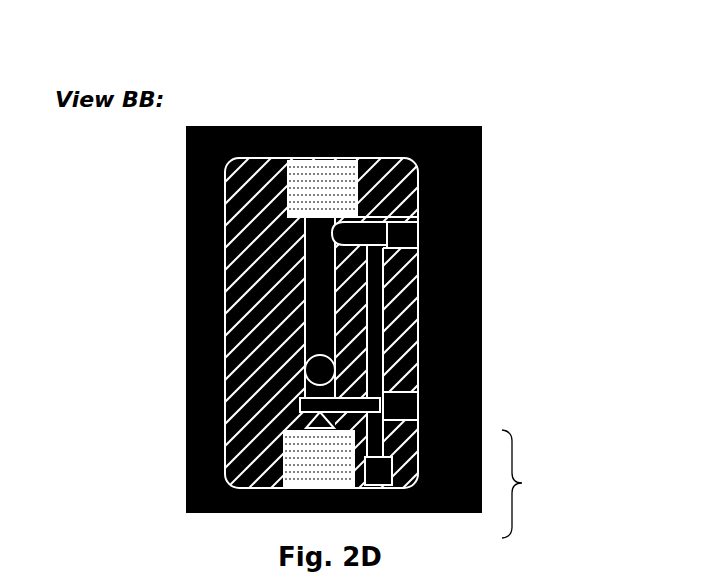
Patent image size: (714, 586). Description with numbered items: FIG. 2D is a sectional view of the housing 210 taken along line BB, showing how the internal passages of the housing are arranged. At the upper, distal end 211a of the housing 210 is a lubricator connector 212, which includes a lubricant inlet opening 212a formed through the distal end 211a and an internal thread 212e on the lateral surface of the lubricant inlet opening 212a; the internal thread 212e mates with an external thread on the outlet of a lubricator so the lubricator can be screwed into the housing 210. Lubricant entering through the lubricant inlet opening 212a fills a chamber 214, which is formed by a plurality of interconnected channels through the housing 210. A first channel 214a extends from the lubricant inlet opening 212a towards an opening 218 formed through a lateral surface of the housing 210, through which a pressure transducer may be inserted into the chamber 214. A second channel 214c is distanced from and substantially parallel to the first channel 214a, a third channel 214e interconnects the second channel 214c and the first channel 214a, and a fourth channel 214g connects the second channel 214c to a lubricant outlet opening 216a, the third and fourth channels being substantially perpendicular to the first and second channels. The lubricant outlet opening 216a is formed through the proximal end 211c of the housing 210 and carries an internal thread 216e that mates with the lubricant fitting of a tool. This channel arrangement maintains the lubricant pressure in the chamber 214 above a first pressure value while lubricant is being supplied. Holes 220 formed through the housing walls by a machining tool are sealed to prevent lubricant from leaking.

The housing 210 is at (97, 58).
The distal end 211a is at (262, 158).
The proximal end 211c is at (250, 486).
The lubricator connector 212 is at (397, 136).
The lubricant inlet opening 212a is at (345, 158).
The internal thread 212e is at (407, 160).
The chamber 214 is at (434, 351).
The first channel 214a is at (350, 300).
The second channel 214c is at (375, 340).
The third channel 214e is at (400, 270).
The fourth channel 214g is at (395, 394).
The lubricant outlet opening 216a is at (345, 490).
The internal thread 216e is at (395, 458).
The opening 218 is at (316, 372).
The holes 220 is at (388, 224).